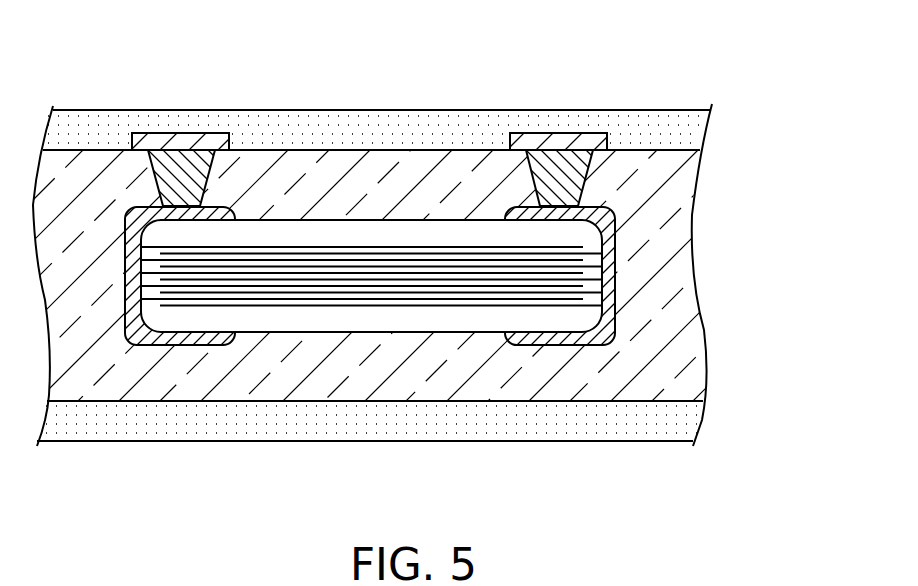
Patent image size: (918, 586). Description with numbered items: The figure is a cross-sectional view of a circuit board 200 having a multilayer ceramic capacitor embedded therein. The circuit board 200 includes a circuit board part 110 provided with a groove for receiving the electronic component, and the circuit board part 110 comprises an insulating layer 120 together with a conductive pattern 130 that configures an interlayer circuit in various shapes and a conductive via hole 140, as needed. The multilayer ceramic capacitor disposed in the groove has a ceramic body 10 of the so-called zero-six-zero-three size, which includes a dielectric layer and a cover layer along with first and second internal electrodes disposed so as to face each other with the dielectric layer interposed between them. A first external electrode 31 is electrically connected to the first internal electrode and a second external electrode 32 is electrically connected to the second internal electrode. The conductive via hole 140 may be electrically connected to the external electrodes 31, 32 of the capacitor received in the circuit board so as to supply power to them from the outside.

The circuit board 200 is at (330, 18).
The circuit board part 110 is at (667, 132).
The insulating layer 120 is at (665, 260).
The conductive pattern 130 is at (557, 142).
The conductive via hole 140 is at (565, 182).
The ceramic body 10 is at (363, 333).
The first external electrode 31 is at (158, 338).
The second external electrode 32 is at (583, 338).